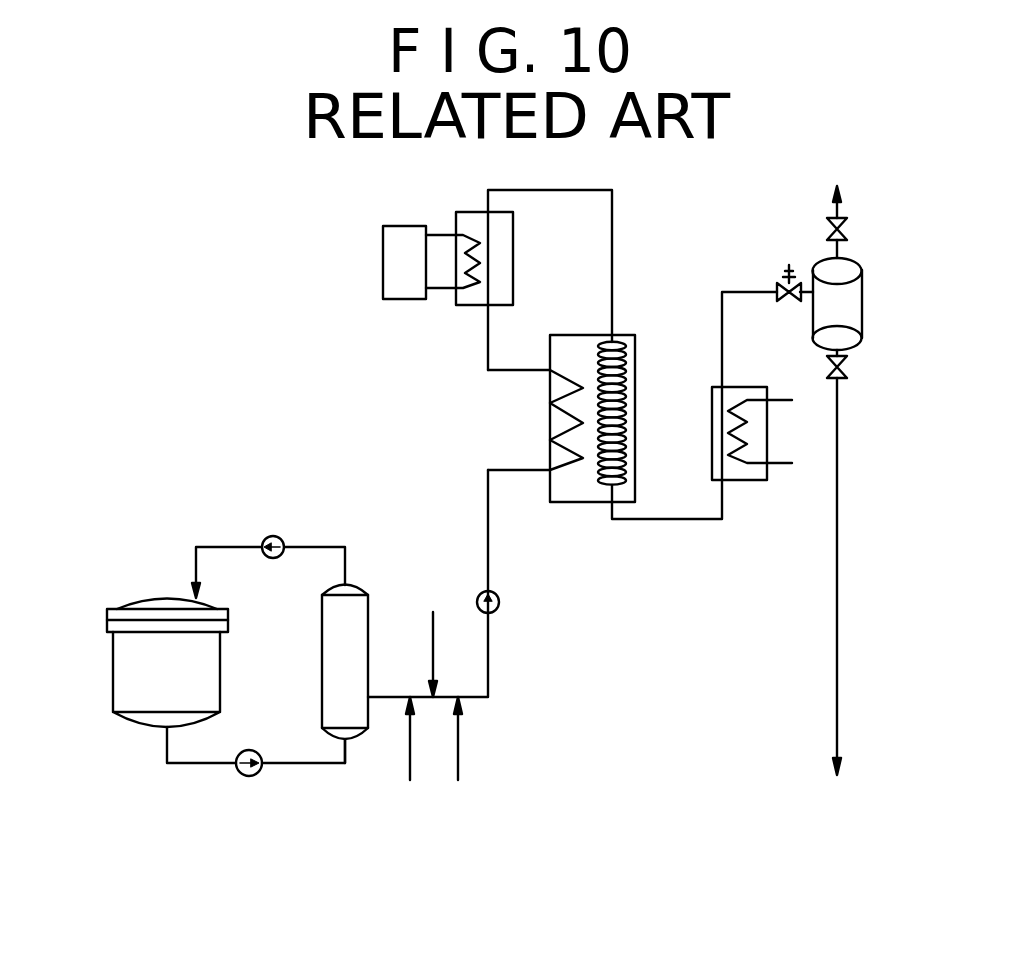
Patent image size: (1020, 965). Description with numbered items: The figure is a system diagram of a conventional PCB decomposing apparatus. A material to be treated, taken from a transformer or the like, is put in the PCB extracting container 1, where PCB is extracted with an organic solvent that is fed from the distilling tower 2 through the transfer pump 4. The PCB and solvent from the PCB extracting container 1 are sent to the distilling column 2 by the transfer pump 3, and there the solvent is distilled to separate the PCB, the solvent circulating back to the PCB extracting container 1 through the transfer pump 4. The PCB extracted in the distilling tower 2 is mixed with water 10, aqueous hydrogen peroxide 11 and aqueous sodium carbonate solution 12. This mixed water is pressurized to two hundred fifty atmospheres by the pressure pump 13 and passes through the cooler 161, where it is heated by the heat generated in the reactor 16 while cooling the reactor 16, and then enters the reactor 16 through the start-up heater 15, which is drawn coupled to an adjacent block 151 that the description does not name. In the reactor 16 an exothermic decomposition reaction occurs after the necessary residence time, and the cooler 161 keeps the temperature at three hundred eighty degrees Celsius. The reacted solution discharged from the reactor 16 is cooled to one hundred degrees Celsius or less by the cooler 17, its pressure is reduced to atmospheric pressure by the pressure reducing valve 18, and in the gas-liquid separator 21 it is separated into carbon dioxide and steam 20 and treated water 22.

The PCB extracting container 1 is at (125, 608).
The distilling tower 2 is at (353, 582).
The transfer pump 3 is at (237, 773).
The transfer pump 4 is at (281, 535).
The water 10 is at (433, 655).
The aqueous hydrogen peroxide 11 is at (409, 757).
The aqueous Na2CO3 solution 12 is at (458, 742).
The pressure pump 13 is at (495, 590).
The start-up heater 15 is at (443, 233).
The heat source 151 is at (383, 272).
The reactor 16 is at (635, 355).
The cooler 161 is at (560, 393).
The cooler 17 is at (744, 483).
The pressure reducing valve 18 is at (777, 290).
The CO2 and steam 20 is at (840, 204).
The gas-liquid separator 21 is at (862, 327).
The treated water 22 is at (838, 730).